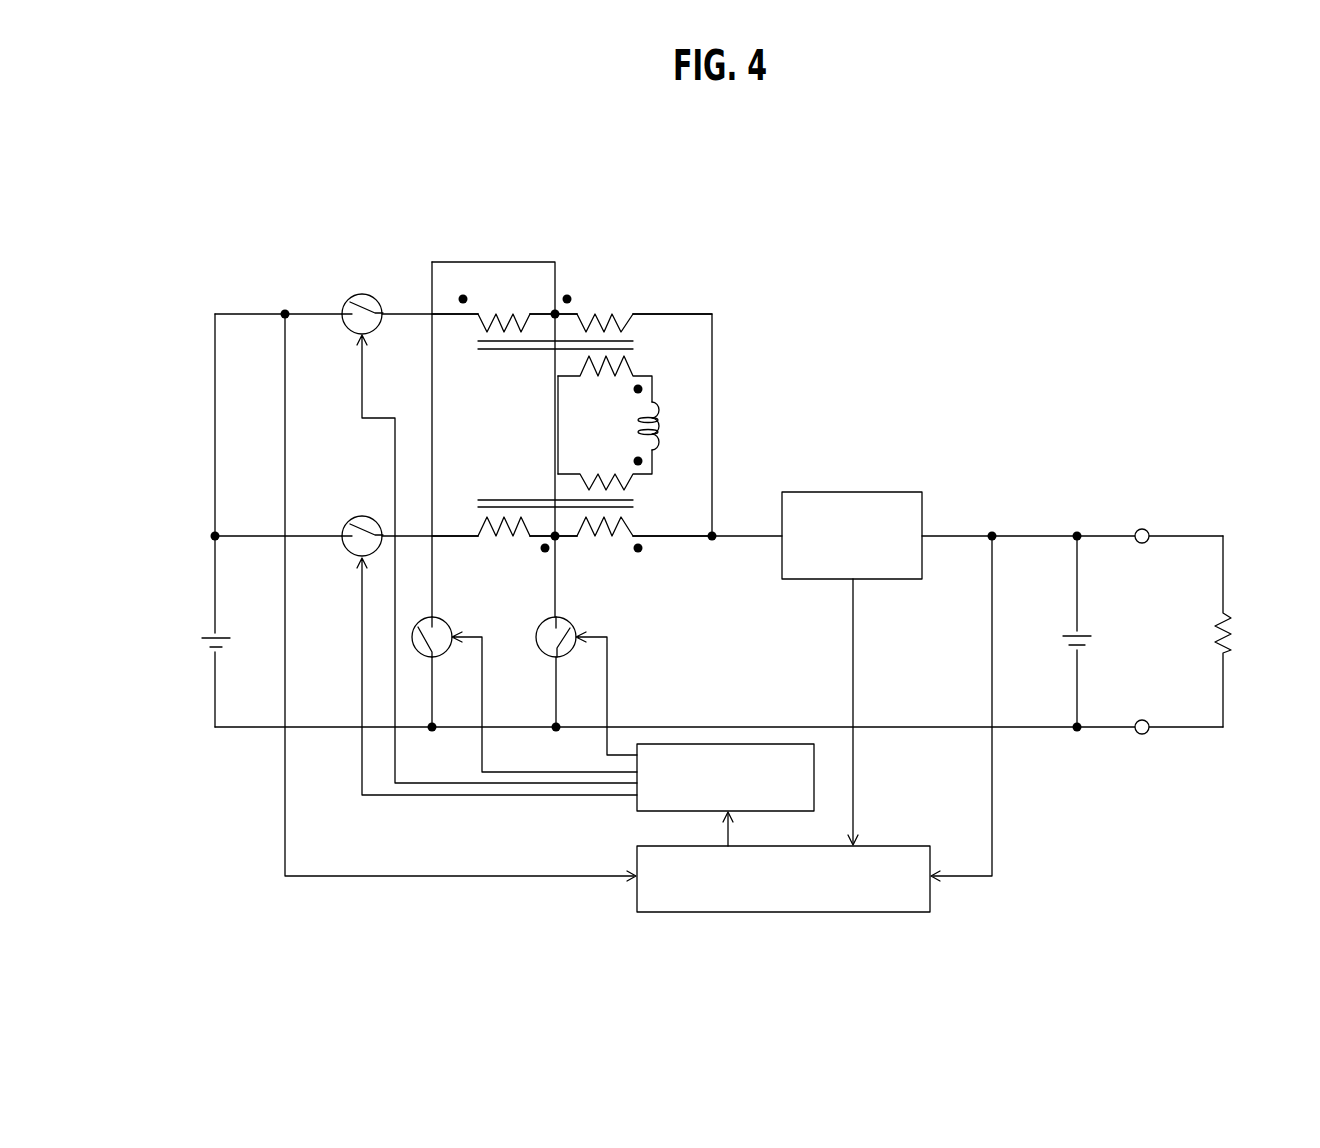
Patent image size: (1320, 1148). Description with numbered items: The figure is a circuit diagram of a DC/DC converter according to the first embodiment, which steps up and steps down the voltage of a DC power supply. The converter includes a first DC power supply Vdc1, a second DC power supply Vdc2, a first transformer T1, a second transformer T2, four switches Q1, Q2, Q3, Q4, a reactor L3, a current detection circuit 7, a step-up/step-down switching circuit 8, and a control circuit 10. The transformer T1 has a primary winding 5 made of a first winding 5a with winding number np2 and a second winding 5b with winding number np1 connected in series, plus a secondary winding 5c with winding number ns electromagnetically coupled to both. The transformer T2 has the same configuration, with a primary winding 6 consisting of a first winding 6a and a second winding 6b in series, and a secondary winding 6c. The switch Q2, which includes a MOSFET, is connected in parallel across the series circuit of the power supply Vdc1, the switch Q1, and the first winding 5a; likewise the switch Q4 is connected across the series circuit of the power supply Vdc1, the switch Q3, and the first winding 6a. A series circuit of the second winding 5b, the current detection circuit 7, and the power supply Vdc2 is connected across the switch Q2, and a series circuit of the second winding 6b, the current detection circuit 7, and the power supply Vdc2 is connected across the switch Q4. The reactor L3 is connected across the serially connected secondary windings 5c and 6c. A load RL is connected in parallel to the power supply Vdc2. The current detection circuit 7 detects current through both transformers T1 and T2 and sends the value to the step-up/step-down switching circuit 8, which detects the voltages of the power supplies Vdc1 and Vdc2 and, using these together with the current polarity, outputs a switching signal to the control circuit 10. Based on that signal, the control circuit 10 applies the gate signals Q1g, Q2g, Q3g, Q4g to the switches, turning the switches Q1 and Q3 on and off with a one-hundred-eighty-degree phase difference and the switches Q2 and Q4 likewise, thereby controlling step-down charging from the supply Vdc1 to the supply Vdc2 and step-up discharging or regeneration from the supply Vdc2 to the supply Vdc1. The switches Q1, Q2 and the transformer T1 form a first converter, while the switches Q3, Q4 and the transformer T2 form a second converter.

The primary winding 5 is at (590, 224).
The first winding 5a is at (504, 262).
The second winding 5b is at (640, 270).
The secondary winding 5c is at (583, 380).
The primary winding 6 is at (621, 588).
The first winding 6a is at (484, 568).
The second winding 6b is at (636, 570).
The secondary winding 6c is at (630, 467).
The current detection circuit 7 is at (838, 492).
The step-up/step-down switching circuit 8 is at (755, 912).
The control circuit 10 is at (652, 812).
The switch Q1 is at (362, 298).
The switch Q2 is at (442, 622).
The switch Q3 is at (362, 519).
The switch Q4 is at (568, 622).
The gate signal of switch Q1 Q1g is at (362, 377).
The gate signal of switch Q2 Q2g is at (483, 712).
The gate signal of switch Q3 Q3g is at (362, 627).
The gate signal of switch Q4 Q4g is at (607, 705).
The transformer T1 is at (535, 349).
The transformer T2 is at (535, 502).
The reactor L3 is at (667, 426).
The winding number of second winding np1 is at (603, 424).
The winding number of first winding np2 is at (504, 424).
The winding number of secondary winding ns is at (616, 424).
The load RL is at (1244, 631).
The DC power supply Vdc1 is at (190, 626).
The DC power supply Vdc2 is at (1113, 631).